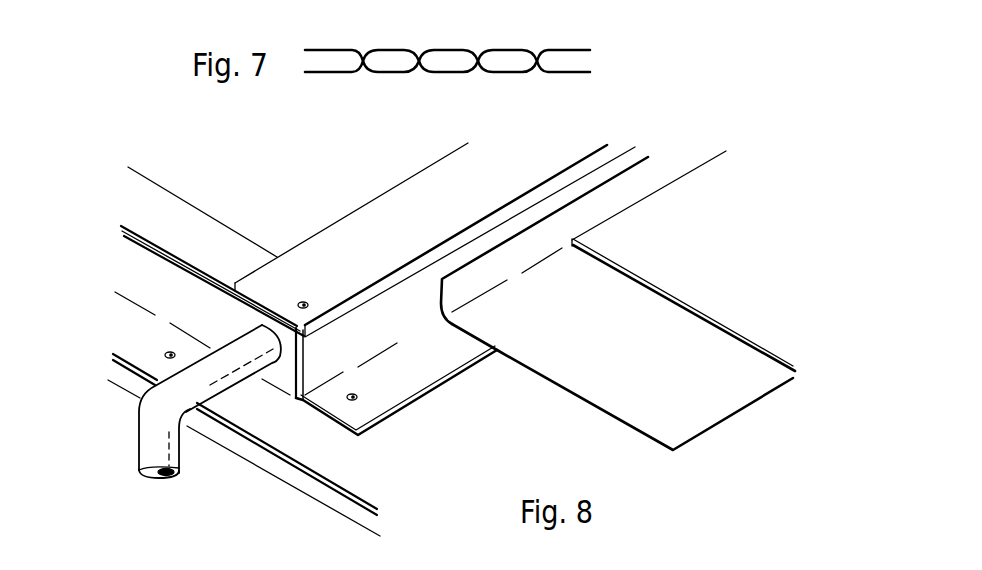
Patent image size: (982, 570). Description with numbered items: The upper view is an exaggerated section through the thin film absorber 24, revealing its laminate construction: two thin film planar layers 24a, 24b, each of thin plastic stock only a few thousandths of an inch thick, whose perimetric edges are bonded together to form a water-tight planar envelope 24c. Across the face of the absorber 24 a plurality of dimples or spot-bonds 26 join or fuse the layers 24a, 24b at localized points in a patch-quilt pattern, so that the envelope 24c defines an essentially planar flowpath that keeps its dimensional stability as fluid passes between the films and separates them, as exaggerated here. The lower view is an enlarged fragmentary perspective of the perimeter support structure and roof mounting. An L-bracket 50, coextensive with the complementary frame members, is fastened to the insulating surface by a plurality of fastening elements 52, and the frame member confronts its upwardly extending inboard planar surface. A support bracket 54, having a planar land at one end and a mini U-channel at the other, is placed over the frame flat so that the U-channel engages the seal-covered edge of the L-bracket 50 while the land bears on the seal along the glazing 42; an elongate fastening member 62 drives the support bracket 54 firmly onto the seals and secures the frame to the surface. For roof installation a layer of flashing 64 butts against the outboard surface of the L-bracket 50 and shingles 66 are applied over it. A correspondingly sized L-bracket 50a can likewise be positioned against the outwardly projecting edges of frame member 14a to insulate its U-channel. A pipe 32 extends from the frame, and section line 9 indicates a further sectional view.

In FIG. 7, the thin film absorber 24 is at (464, 47).
In FIG. 7, the thin film planar layer 24a is at (570, 50).
In FIG. 7, the thin film planar layer 24b is at (574, 72).
In FIG. 7, the water-tight planar envelope 24c is at (390, 60).
In FIG. 7, the spot-bonds 26 is at (363, 72).
In FIG. 8, the frame member 14a is at (202, 223).
In FIG. 8, the glazing 42 is at (297, 187).
In FIG. 8, the L-bracket 50 is at (405, 318).
In FIG. 8, the L-bracket 50a is at (183, 292).
In FIG. 8, the fastening elements 52 is at (168, 353).
In FIG. 8, the support bracket 54 is at (423, 185).
In FIG. 8, the elongate fastening member 62 is at (303, 302).
In FIG. 8, the flashing 64 is at (607, 392).
In FIG. 8, the shingles 66 is at (682, 285).
In FIG. 8, the bent tube 32 is at (153, 433).
In FIG. 8, the section line 9- 9 is at (181, 235).